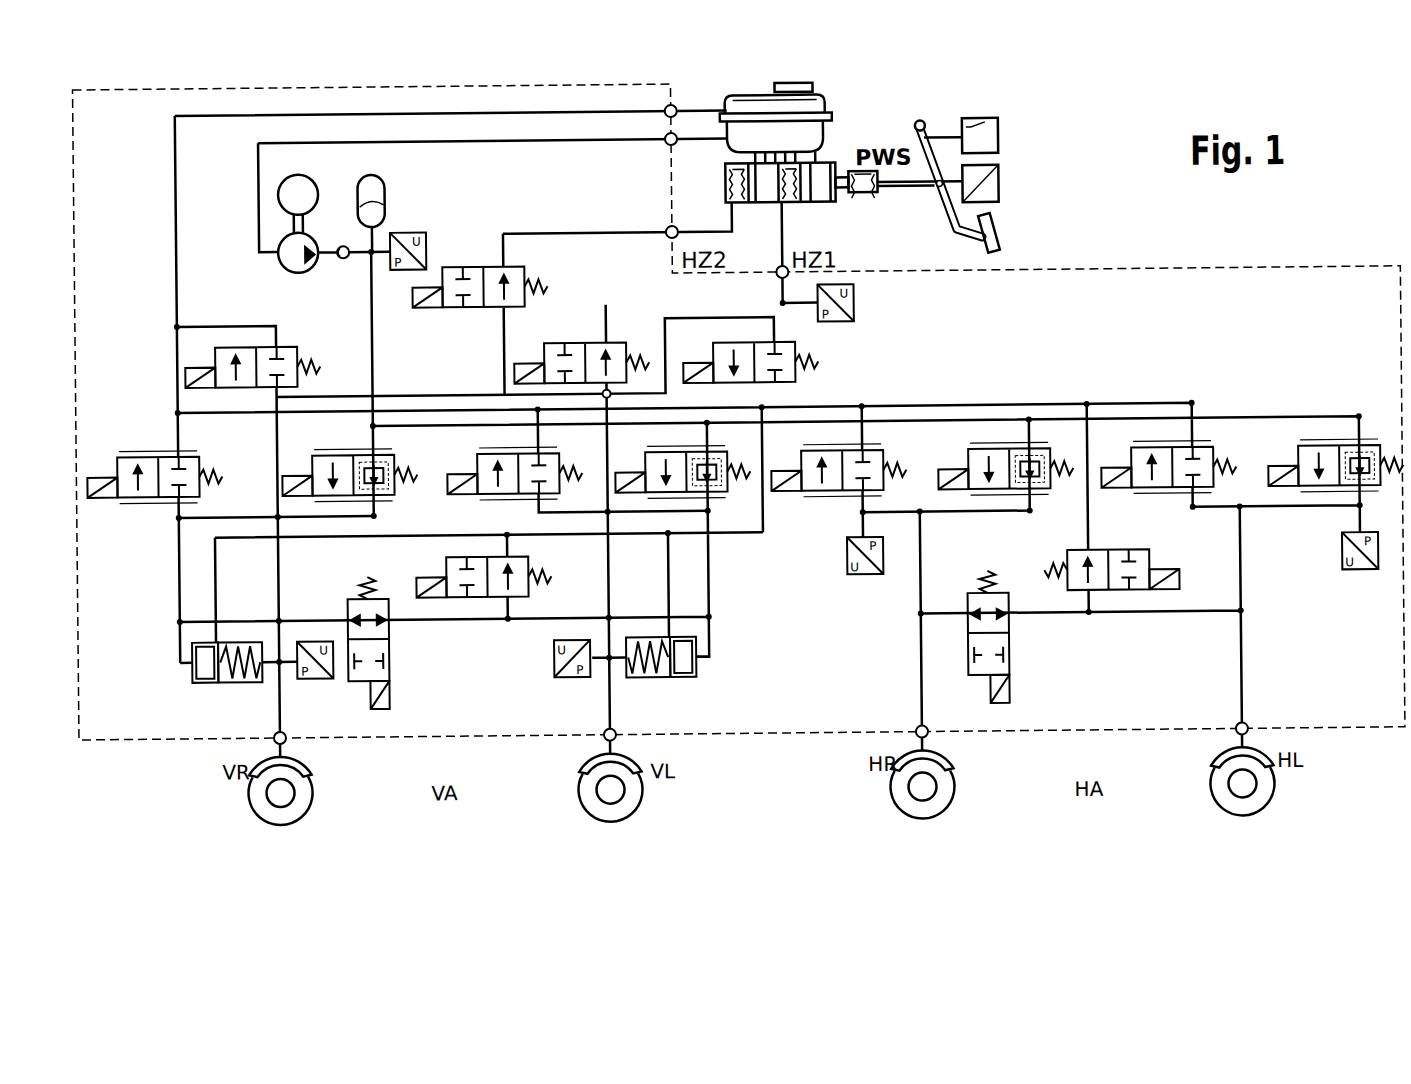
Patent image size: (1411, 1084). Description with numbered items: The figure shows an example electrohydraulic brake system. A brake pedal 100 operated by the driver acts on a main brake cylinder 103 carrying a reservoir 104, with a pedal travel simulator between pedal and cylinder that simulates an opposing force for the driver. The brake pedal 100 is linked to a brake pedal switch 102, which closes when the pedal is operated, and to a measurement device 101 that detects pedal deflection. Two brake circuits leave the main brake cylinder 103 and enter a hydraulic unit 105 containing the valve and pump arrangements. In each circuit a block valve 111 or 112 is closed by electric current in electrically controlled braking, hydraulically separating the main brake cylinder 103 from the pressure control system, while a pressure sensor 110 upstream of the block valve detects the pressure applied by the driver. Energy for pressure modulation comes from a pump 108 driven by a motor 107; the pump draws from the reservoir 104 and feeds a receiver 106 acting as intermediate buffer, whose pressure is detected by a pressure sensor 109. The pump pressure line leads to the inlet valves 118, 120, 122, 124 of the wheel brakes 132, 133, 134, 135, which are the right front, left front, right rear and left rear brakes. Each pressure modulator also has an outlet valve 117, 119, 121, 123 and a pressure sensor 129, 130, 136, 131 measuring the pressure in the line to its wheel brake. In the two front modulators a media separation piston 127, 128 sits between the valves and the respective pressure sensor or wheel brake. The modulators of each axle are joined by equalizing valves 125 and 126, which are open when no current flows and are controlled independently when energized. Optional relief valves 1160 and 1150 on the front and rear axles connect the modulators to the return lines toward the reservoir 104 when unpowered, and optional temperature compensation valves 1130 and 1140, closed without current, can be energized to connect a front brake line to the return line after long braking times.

The brake pedal 100 is at (1000, 237).
The measurement device 101 is at (1004, 192).
The brake pedal switch 102 is at (1004, 133).
The main brake cylinder 103 is at (848, 147).
The reservoir 104 is at (768, 108).
The hydraulic unit 105 is at (606, 90).
The receiver 106 is at (390, 188).
The motor 107 is at (284, 197).
The pump 108 is at (285, 259).
The pressure sensor 109 is at (411, 236).
The pressure sensor 110 is at (858, 311).
The block valve 111 is at (506, 272).
The block valve 112 is at (596, 348).
The temperature compensation valve 1130 is at (292, 360).
The temperature compensation valve 1140 is at (803, 353).
The outlet valve 117 is at (151, 454).
The inlet valve 118 is at (398, 463).
The outlet valve 119 is at (502, 500).
The inlet valve 120 is at (720, 504).
The outlet valve 121 is at (843, 500).
The inlet valve 122 is at (1008, 499).
The outlet valve 123 is at (1209, 466).
The inlet valve 124 is at (1372, 458).
The relief valve 1150 is at (1137, 560).
The relief valve 1160 is at (448, 566).
The equalizing valve 125 is at (389, 660).
The equalizing valve 126 is at (1005, 656).
The media separation piston 127 is at (193, 676).
The media separation piston 128 is at (699, 672).
The pressure sensor 129 is at (318, 686).
The pressure sensor 130 is at (555, 668).
The pressure sensor 131 is at (1344, 562).
The pressure sensor 136 is at (875, 581).
The wheel brake 132 is at (320, 811).
The wheel brake 133 is at (580, 810).
The wheel brake 134 is at (955, 802).
The wheel brake 135 is at (1210, 801).